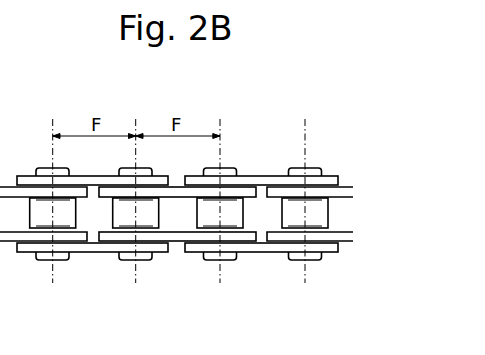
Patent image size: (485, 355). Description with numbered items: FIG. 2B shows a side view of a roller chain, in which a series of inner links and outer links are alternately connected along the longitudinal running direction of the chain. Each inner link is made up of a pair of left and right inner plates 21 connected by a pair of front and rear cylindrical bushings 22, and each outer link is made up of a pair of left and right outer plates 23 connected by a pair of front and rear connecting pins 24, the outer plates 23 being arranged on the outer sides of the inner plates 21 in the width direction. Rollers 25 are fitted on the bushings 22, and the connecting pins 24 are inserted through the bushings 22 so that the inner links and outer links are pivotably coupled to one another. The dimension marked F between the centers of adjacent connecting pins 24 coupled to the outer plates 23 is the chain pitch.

The inner plates 21 is at (345, 190).
The bushings 22 is at (231, 230).
The outer plates 23 is at (333, 180).
The connecting pins 24 is at (210, 259).
The rollers 25 is at (322, 212).